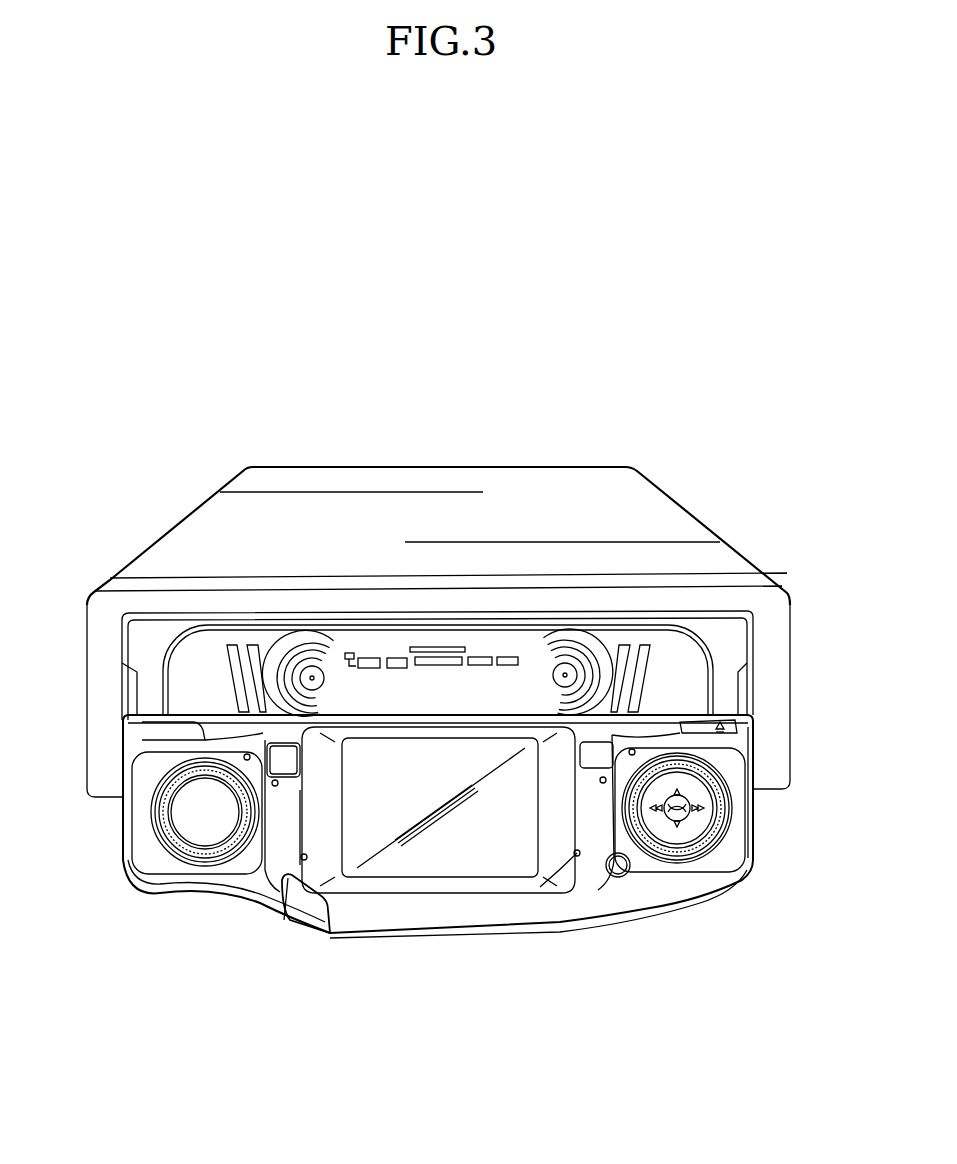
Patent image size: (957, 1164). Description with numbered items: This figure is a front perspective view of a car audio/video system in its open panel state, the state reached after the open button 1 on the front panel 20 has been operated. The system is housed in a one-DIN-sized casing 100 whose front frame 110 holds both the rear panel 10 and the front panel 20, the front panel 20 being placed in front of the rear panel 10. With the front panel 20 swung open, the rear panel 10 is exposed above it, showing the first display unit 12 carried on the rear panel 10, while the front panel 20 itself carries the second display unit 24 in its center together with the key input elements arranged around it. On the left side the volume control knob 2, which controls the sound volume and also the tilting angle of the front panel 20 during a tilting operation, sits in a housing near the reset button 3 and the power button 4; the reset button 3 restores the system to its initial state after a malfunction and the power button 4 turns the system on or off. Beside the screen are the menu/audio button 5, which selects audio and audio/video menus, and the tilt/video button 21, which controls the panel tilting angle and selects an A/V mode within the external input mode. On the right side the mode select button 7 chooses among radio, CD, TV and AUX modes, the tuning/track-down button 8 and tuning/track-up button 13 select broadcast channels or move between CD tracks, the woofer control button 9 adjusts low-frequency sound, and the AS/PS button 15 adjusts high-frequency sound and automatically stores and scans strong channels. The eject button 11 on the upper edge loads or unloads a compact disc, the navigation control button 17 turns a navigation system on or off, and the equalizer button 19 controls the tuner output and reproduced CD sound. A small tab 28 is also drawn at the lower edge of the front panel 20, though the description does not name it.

The casing 100 is at (553, 470).
The front frame 110 is at (755, 583).
The rear panel 10 is at (740, 637).
The first display unit 12 is at (340, 647).
The open button 1 is at (147, 732).
The volume control knob 2 is at (213, 770).
The reset button 3 is at (151, 773).
The power button 4 is at (187, 835).
The menu/audio button 5 is at (277, 813).
The tilt/video button 21 is at (280, 847).
The tab 28 is at (303, 910).
The second display unit 24 is at (443, 867).
The woofer control button 9 is at (710, 867).
The AS/PS button 15 is at (675, 863).
The mode select button 7 is at (713, 755).
The tuning/track-up button 13 is at (697, 800).
The tuning/track-down button 8 is at (640, 853).
The eject button 11 is at (730, 725).
The front panel 20 is at (753, 812).
The navigation control button 17 is at (622, 877).
The equalizer button 19 is at (583, 850).